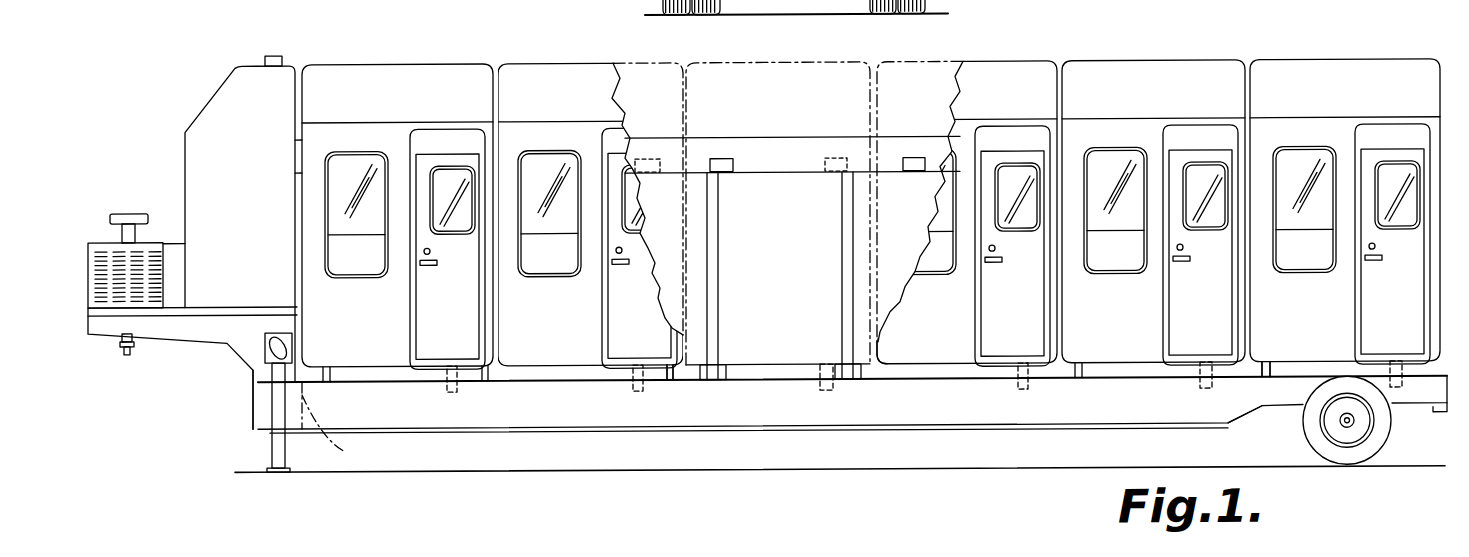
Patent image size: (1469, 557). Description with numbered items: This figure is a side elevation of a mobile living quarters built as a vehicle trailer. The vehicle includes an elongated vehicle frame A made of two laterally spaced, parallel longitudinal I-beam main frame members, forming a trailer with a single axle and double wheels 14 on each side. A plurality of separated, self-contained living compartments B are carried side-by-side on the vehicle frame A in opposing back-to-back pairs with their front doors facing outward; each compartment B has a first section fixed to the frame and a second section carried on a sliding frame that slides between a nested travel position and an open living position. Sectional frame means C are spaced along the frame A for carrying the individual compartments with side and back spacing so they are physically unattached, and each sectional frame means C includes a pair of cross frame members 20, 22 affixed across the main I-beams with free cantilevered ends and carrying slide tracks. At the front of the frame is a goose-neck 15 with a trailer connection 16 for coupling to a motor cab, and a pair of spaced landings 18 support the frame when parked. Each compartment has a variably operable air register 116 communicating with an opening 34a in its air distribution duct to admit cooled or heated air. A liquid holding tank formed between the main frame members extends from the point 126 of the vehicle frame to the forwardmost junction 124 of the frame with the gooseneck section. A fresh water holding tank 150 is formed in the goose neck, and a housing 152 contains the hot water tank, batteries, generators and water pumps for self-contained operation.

The vehicle frame A is at (830, 412).
The living compartment B is at (377, 65).
The sectional frame means C is at (472, 388).
The wheel 14 is at (1352, 427).
The goose-neck 15 is at (228, 344).
The trailer connection 16 is at (127, 357).
The landing 18 is at (272, 446).
The cross frame member 20 is at (670, 375).
The cross frame member 22 is at (512, 380).
The opening 34a is at (718, 160).
The air register 116 is at (730, 180).
The forwardmost junction 124 is at (346, 427).
The point of the vehicle frame 126 is at (1260, 418).
The fresh water holding tank 150 is at (253, 386).
The housing 152 is at (208, 98).